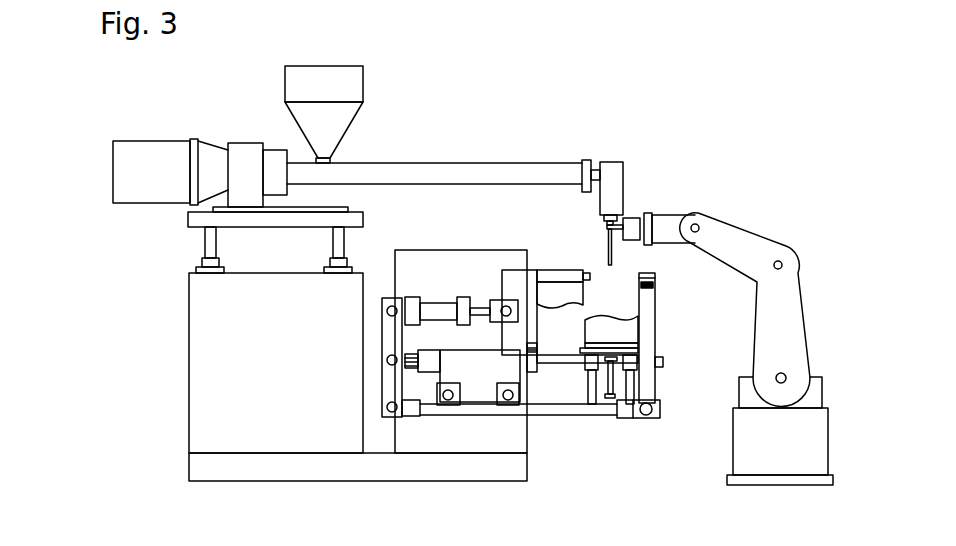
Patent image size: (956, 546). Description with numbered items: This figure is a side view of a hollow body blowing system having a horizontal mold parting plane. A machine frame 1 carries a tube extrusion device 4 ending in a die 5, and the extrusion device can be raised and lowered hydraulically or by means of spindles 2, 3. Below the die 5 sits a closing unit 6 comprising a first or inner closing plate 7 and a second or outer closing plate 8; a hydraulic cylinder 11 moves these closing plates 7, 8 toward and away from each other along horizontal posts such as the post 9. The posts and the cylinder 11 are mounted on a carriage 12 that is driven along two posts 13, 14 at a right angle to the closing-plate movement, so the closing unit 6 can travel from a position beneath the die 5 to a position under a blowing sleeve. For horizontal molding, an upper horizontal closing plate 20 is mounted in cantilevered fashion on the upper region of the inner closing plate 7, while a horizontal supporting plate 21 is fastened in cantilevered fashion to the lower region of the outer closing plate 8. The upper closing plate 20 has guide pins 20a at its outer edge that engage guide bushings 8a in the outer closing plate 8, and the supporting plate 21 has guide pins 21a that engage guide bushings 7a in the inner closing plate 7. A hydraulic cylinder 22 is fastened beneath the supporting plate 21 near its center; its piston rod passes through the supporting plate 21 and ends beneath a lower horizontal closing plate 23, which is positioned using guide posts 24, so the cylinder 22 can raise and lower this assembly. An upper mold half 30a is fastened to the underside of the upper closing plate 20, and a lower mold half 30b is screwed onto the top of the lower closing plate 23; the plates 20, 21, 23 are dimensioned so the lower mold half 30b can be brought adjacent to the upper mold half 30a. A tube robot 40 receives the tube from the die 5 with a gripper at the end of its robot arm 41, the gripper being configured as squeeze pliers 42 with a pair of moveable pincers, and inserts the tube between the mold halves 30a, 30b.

The machine frame 1 is at (242, 371).
The spindle 2 is at (208, 245).
The spindle 3 is at (338, 248).
The tube extrusion device 4 is at (405, 172).
The die 5 is at (605, 218).
The closing unit 6 is at (563, 432).
The first or inner closing plate 7 is at (527, 268).
The guide bushings 7a is at (527, 350).
The second or outer closing plate 8 is at (647, 322).
The guide bushings 8a is at (656, 282).
The horizontal post 9 is at (565, 366).
The hydraulic cylinder 11 is at (441, 300).
The carriage 12 is at (481, 388).
The post 13 is at (446, 408).
The post 14 is at (508, 408).
The upper horizontal closing plate 20 is at (553, 270).
The guide pins 20a is at (584, 271).
The horizontal supporting plate 21 is at (640, 357).
The guide pins 21a is at (581, 367).
The hydraulic cylinder 22 is at (609, 404).
The lower horizontal closing plate 23 is at (640, 344).
The guide posts 24 is at (593, 407).
The upper mold half 30a is at (553, 300).
The lower mold half 30b is at (605, 327).
The tube robot 40 is at (748, 497).
The robot arm 41 is at (735, 245).
The squeeze pliers 42 is at (670, 213).